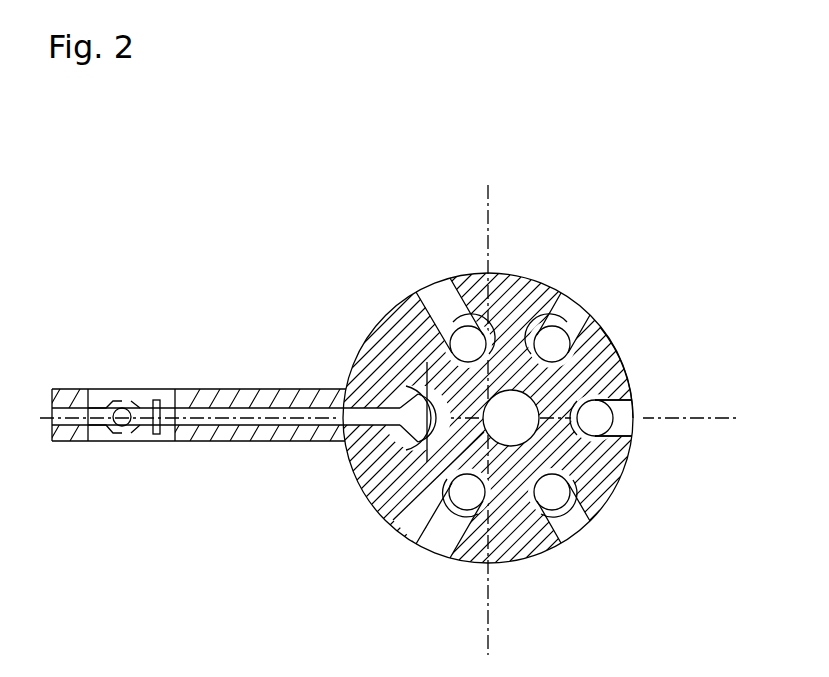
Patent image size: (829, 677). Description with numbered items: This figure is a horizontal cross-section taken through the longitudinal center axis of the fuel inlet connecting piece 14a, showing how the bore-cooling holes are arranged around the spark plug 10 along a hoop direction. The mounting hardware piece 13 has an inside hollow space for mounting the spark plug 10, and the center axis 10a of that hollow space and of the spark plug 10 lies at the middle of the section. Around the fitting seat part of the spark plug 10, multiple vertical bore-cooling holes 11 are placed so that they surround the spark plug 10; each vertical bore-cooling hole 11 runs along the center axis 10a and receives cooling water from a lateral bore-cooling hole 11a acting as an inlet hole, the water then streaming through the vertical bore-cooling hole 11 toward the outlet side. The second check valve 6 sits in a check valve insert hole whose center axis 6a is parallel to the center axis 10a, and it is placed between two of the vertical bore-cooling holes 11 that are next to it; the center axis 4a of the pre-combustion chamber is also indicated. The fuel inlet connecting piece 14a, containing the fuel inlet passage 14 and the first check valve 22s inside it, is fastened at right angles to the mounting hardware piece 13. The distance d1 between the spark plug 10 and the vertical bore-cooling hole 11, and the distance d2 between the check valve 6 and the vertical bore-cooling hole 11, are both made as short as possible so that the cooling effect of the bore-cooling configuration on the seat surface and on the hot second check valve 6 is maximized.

The center axis of the pre-combustion chamber 4a is at (398, 388).
The second check valve 6 is at (392, 492).
The center axis of the check valve insert hole 6a is at (400, 402).
The spark plug 10 is at (583, 455).
The center axis of the spark plug 10a is at (521, 398).
The vertical bore-cooling hole 11 is at (603, 443).
The lateral bore-cooling hole 11a is at (614, 392).
The mounting hardware piece 13 is at (601, 326).
The fuel inlet passage 14 is at (256, 443).
The fuel inlet connecting piece 14a is at (310, 443).
The first check valve 22s is at (137, 444).
The distance between the spark plug and the vertical bore-cooling hole d1 is at (576, 388).
The distance between the check valve and the vertical bore-cooling hole d2 is at (386, 340).